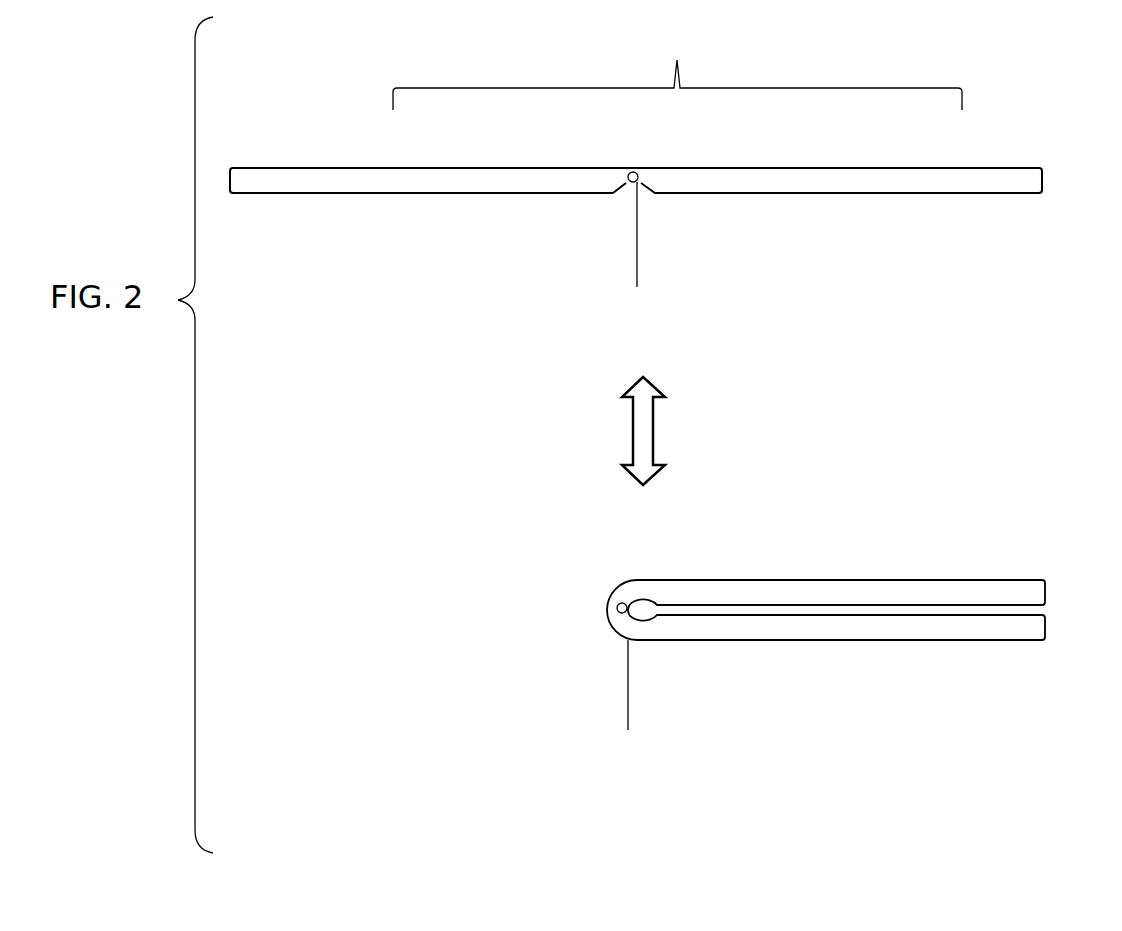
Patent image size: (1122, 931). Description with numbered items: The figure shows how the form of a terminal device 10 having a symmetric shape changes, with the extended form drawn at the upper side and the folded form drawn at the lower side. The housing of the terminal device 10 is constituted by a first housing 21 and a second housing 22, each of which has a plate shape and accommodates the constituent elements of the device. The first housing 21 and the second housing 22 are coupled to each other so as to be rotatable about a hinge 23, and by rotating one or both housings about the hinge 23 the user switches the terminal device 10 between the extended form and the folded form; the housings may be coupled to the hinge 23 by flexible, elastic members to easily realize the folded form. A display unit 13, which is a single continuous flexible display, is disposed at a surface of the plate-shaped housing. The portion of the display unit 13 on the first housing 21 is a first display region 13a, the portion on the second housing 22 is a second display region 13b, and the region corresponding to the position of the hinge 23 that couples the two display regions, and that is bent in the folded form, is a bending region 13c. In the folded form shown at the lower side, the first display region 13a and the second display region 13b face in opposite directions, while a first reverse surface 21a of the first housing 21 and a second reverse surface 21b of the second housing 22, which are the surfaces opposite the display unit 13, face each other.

The terminal device 10 is at (1043, 136).
The display unit 13 is at (677, 70).
The first display region 13a is at (456, 167).
The second display region 13b is at (838, 167).
The bending region 13c is at (626, 167).
The first housing 21 is at (308, 187).
The first reverse surface 21a is at (433, 193).
The second reverse surface 21b is at (835, 193).
The second housing 22 is at (1003, 188).
The hinge 23 is at (637, 287).